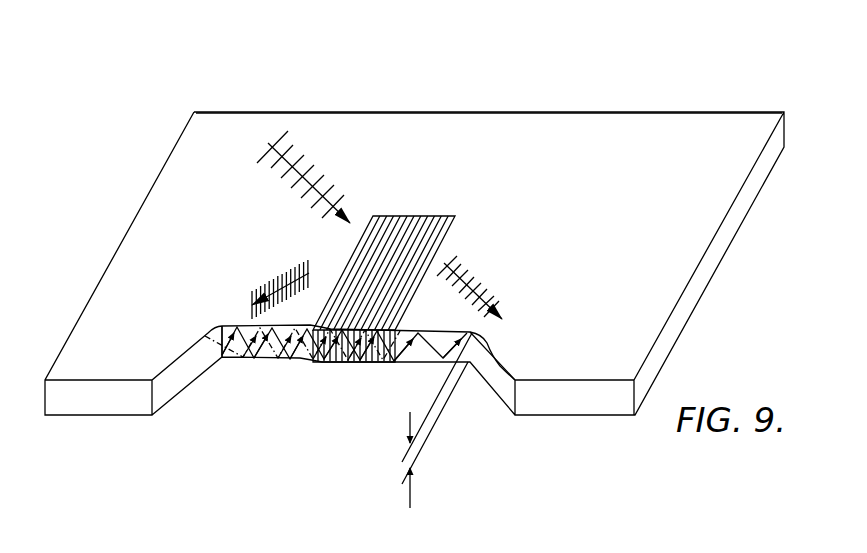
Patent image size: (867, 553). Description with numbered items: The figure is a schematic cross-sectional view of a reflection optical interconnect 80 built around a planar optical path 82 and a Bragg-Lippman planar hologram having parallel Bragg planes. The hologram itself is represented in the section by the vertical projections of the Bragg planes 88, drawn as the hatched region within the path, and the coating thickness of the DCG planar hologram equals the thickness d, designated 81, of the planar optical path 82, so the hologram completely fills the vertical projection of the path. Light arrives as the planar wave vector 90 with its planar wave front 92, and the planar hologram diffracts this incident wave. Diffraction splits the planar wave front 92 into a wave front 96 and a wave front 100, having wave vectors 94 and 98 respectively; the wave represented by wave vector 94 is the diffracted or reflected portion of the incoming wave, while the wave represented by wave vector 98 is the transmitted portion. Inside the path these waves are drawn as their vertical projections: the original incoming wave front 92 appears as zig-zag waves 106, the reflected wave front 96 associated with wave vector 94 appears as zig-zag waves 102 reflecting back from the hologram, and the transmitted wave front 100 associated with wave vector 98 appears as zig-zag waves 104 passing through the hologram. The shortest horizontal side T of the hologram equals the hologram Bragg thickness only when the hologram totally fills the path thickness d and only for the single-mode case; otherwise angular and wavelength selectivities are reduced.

The reflection optical interconnect 80 is at (706, 66).
The thickness d of the planar optical path 81 is at (418, 457).
The planar optical path 82 is at (740, 128).
The vertical projections of the Bragg planes 88 is at (362, 366).
The planar wave vector 90 is at (318, 184).
The planar wave front 92 is at (290, 180).
The wave vector 94 is at (286, 286).
The wave front 96 is at (272, 280).
The wave vector 98 is at (490, 282).
The wave front 100 is at (470, 268).
The zig-zag waves 102 is at (272, 352).
The zig-zag waves 104 is at (425, 338).
The zig-zag waves 106 is at (250, 362).